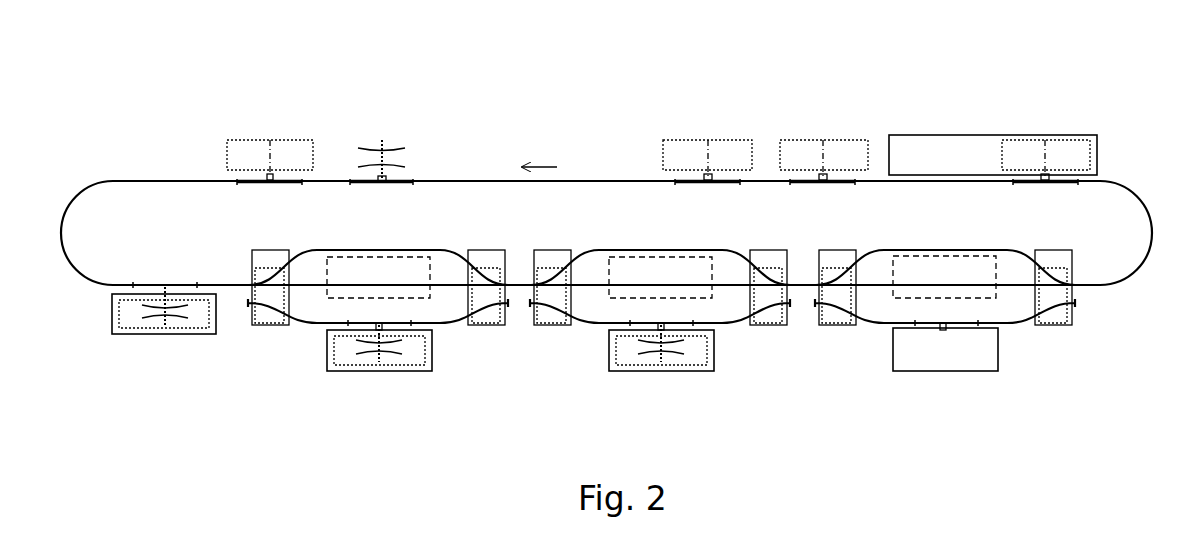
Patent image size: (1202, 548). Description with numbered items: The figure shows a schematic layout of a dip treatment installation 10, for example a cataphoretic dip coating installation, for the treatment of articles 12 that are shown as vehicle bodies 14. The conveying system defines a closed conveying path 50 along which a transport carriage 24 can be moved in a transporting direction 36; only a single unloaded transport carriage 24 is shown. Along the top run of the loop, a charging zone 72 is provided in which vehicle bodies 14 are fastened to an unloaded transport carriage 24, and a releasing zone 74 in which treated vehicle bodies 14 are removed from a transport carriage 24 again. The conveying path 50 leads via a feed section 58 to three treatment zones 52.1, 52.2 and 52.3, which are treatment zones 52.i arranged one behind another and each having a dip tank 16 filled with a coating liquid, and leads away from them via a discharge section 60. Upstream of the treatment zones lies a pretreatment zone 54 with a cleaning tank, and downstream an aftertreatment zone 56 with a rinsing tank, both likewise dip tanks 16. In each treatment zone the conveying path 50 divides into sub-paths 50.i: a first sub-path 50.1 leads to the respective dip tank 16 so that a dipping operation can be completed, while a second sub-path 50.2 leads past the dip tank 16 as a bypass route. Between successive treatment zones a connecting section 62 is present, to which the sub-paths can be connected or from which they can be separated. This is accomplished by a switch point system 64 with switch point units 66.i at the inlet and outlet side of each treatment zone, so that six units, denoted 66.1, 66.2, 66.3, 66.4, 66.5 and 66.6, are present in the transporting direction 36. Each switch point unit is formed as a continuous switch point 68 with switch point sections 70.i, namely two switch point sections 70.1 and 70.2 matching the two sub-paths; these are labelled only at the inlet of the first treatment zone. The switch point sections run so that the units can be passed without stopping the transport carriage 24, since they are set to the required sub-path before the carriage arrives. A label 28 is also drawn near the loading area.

The dip treatment installation 10 is at (858, 79).
The article 12 is at (228, 150).
The vehicle body 14 is at (247, 150).
The dip tank 16 is at (990, 134).
The transport carriage 24 is at (408, 177).
The gripping device 28 is at (392, 149).
The transporting direction 36 is at (555, 166).
The conveying path 50 is at (135, 177).
The first sub-path 50.1 is at (318, 328).
The second sub-path 50.2 is at (378, 250).
The sub-path 50.i is at (446, 246).
The first treatment zone 52.1 is at (384, 379).
The second treatment zone 52.2 is at (666, 379).
The third treatment zone 52.3 is at (956, 379).
The treatment zone 52.i is at (290, 409).
The pretreatment zone 54 is at (127, 341).
The aftertreatment zone 56 is at (1052, 117).
The feed section 58 is at (210, 284).
The discharge section 60 is at (1112, 286).
The connecting section 62 is at (506, 270).
The switch point system 64 is at (575, 229).
The first switch point unit 66.1 is at (270, 333).
The second switch point unit 66.2 is at (493, 333).
The third switch point unit 66.3 is at (560, 333).
The fourth switch point unit 66.4 is at (767, 333).
The fifth switch point unit 66.5 is at (826, 333).
The sixth switch point unit 66.6 is at (1056, 328).
The switch point unit 66.i is at (1090, 250).
The continuous switch point 68 is at (258, 328).
The first switch point section 70.1 is at (267, 305).
The second switch point section 70.2 is at (272, 284).
The switch point section 70.i is at (246, 277).
The charging zone 72 is at (268, 137).
The releasing zone 74 is at (723, 136).